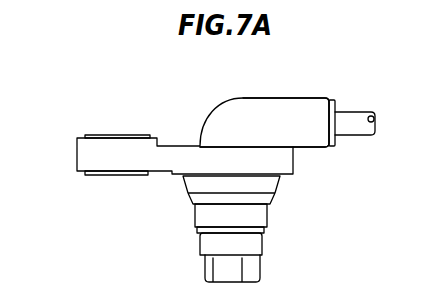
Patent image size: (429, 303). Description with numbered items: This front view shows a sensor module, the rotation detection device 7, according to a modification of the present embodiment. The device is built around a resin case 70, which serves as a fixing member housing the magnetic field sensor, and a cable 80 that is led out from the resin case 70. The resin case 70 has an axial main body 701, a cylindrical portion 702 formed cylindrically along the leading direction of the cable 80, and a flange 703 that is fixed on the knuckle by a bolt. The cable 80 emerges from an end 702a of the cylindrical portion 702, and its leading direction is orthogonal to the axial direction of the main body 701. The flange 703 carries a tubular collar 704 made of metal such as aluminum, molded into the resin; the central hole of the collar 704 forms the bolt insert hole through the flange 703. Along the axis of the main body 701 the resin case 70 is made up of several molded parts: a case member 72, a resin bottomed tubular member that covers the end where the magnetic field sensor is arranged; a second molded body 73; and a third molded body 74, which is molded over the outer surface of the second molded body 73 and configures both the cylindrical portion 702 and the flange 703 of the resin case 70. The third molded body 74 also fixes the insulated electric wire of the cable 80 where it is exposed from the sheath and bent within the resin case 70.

The rotation detection device 7 is at (338, 54).
The resin case 70 is at (188, 106).
The main body 701 is at (291, 237).
The cylindrical portion 702 is at (262, 89).
The end of the cylindrical portion 702a is at (344, 144).
The flange 703 is at (145, 117).
The tubular collar 704 is at (113, 177).
The case member 72 is at (202, 245).
The second molded body 73 is at (193, 218).
The third molded body 74 is at (185, 182).
The cable 80 is at (356, 116).